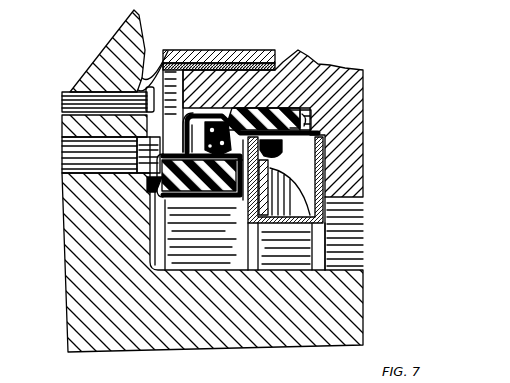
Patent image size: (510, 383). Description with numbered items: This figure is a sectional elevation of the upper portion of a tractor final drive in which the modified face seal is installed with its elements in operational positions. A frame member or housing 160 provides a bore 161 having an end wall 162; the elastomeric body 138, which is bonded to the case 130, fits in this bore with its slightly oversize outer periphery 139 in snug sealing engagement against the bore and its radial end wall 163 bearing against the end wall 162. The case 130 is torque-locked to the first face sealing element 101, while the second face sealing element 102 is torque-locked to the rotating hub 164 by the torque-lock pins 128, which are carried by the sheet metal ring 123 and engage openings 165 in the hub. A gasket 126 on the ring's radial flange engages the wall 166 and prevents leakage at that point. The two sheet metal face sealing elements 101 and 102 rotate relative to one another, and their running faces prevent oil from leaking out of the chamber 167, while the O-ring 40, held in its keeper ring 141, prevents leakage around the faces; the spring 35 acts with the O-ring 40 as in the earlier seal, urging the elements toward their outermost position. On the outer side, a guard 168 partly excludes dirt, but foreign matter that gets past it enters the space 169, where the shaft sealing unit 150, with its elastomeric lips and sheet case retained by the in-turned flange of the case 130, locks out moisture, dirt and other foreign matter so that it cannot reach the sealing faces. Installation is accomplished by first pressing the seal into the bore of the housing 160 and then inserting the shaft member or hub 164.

The rotating hub 164 is at (72, 215).
The space 169 is at (168, 68).
The guard 168 is at (190, 52).
The frame member or housing 160 is at (358, 80).
The openings 165 is at (78, 148).
The torque-lock pin 128 is at (146, 154).
The gasket 126 is at (152, 187).
The sheet metal ring 123 is at (157, 197).
The shaft sealing unit 150 is at (207, 142).
The outer periphery 139 is at (277, 107).
The bore 161 is at (298, 110).
The elastomeric body 138 is at (313, 108).
The end wall 162 is at (312, 119).
The radial end wall 163 is at (314, 121).
The case 130 is at (322, 183).
The face sealing element 102 is at (235, 182).
The O-ring 40 is at (270, 150).
The keeper ring 141 is at (262, 162).
The spring 35 is at (268, 215).
The wall 166 is at (149, 219).
The face sealing element 101 is at (265, 225).
The chamber 167 is at (335, 248).